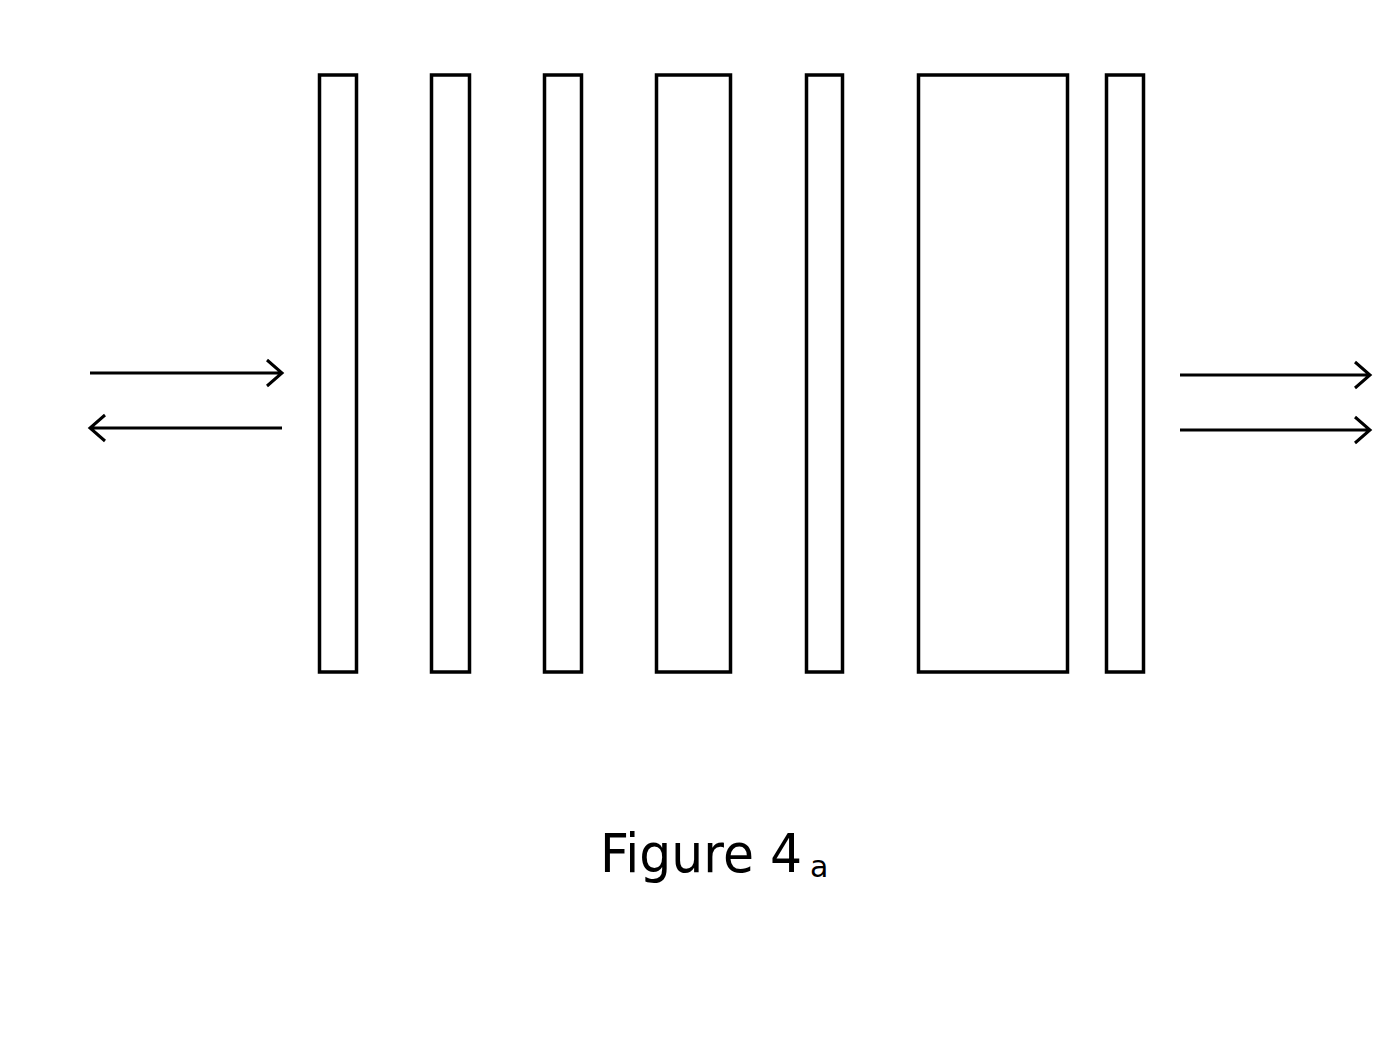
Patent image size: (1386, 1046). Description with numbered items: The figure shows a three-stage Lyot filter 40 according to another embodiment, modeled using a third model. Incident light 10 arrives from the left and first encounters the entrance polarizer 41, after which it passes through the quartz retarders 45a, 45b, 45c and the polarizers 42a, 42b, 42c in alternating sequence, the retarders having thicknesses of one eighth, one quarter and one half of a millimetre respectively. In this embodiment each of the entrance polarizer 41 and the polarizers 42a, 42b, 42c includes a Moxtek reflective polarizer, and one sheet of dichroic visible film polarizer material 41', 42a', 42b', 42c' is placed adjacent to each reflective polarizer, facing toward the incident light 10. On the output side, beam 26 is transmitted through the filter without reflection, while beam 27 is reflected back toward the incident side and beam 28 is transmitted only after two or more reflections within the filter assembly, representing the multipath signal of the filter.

The incident light 10 is at (186, 351).
The beam 26 is at (1275, 354).
The beam 27 is at (186, 454).
The beam 28 is at (1275, 455).
The 3-stage Lyot filter 40 is at (1208, 690).
The entrance polarizer 41 is at (336, 418).
The dichroic visible film polarizer material 41' is at (282, 131).
The polarizer 42a is at (564, 418).
The dichroic visible film polarizer material 42a' is at (511, 123).
The polarizer 42b is at (826, 418).
The dichroic visible film polarizer material 42b' is at (780, 69).
The polarizer 42c is at (1124, 418).
The dichroic visible film polarizer material 42c' is at (1088, 64).
The quartz retarder 45a is at (455, 685).
The quartz retarder 45b is at (695, 685).
The quartz retarder 45c is at (1000, 685).